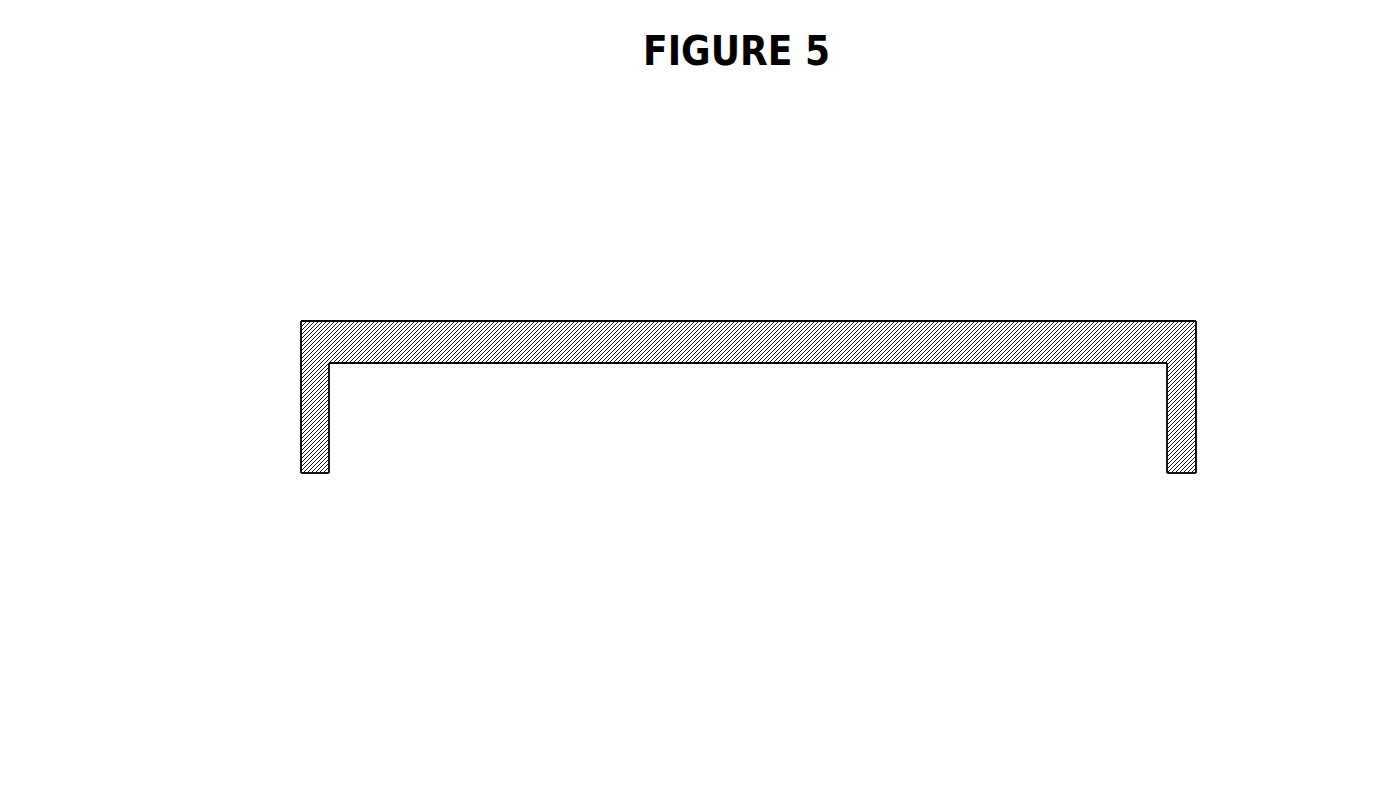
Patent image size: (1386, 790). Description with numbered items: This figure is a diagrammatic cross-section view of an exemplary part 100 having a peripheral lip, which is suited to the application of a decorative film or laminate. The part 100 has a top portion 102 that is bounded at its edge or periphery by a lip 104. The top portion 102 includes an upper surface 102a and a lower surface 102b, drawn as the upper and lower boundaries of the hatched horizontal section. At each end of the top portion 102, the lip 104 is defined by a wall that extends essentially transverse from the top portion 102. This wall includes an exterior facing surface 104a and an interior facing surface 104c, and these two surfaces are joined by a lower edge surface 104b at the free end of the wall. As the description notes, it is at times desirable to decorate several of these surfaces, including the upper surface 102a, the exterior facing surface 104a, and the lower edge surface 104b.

The part 100 is at (419, 260).
The top portion 102 is at (748, 345).
The upper surface 102a is at (748, 289).
The lower surface 102b is at (748, 403).
The lip 104 is at (735, 461).
The exterior facing surface 104a is at (734, 408).
The lower edge surface 104b is at (682, 537).
The interior facing surface 104c is at (748, 425).